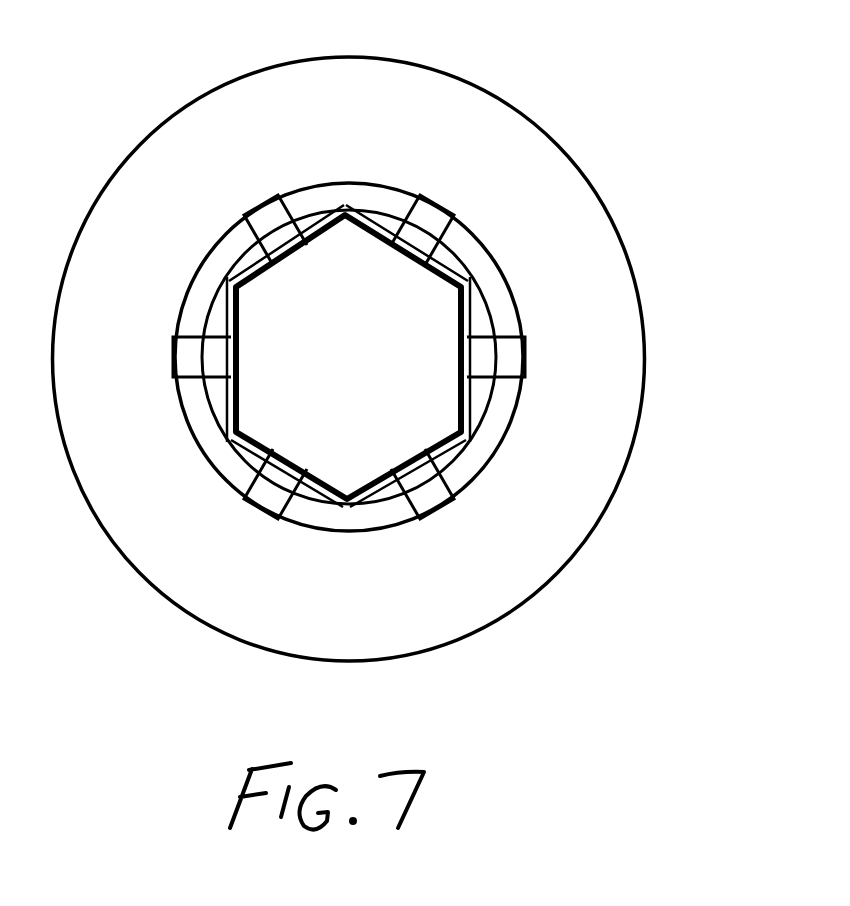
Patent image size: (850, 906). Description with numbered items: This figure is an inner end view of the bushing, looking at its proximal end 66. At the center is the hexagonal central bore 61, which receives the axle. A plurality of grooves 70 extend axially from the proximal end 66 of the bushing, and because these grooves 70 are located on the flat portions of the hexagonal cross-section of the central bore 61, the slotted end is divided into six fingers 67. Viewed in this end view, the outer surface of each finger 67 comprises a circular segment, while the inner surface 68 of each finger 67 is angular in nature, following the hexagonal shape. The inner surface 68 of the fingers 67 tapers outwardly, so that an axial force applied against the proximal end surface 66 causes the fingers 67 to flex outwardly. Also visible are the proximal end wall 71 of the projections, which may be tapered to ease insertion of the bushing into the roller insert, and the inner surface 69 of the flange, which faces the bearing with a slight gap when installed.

The central bore 61 is at (365, 386).
The proximal end 66 is at (243, 233).
The fingers 67 is at (238, 512).
The inner surface 68 is at (263, 279).
The inner surface 69 is at (568, 257).
The grooves 70 is at (430, 206).
The proximal end wall 71 is at (200, 298).